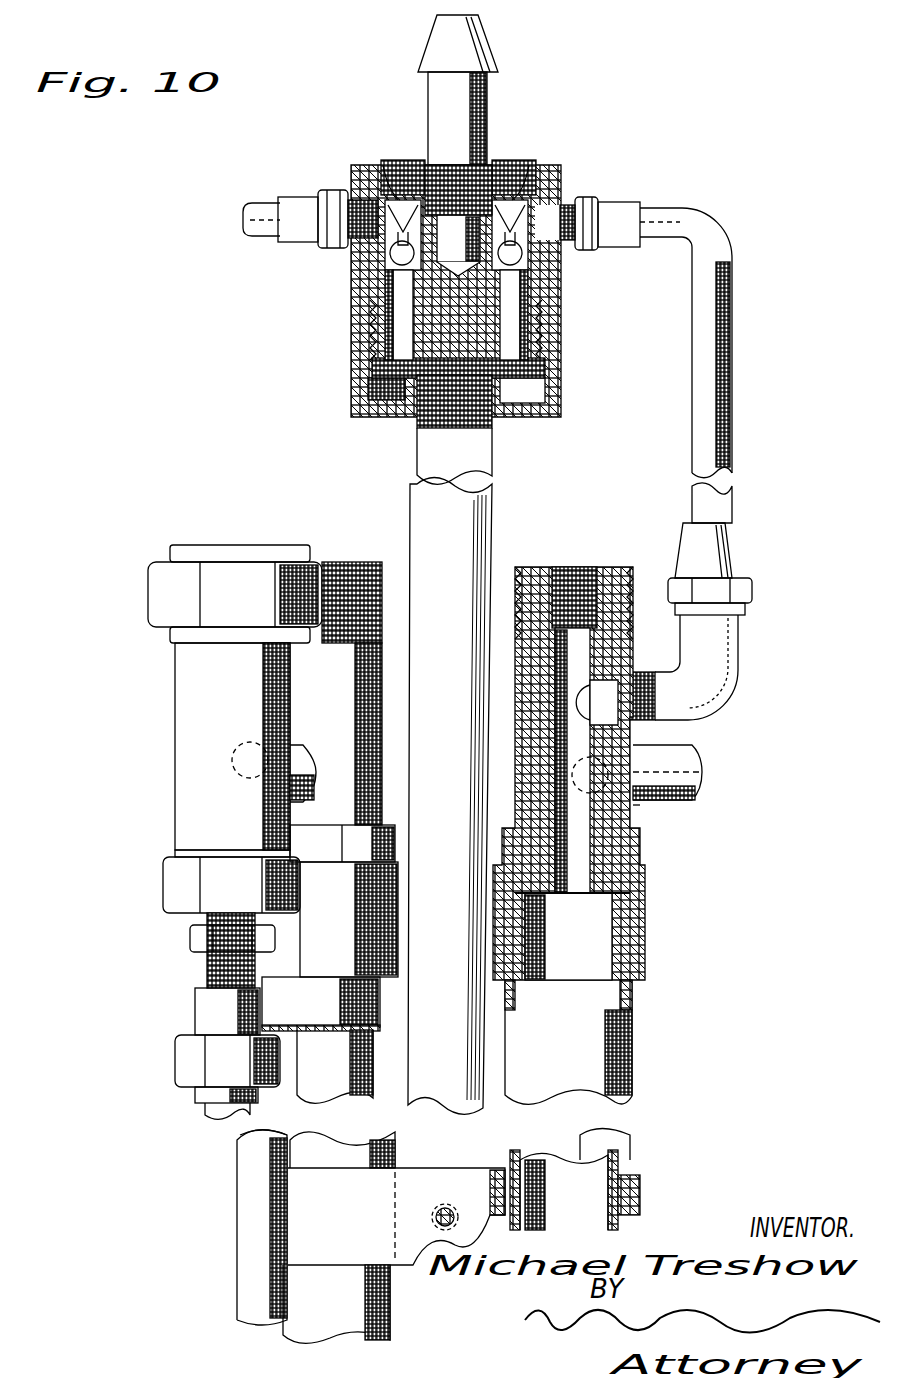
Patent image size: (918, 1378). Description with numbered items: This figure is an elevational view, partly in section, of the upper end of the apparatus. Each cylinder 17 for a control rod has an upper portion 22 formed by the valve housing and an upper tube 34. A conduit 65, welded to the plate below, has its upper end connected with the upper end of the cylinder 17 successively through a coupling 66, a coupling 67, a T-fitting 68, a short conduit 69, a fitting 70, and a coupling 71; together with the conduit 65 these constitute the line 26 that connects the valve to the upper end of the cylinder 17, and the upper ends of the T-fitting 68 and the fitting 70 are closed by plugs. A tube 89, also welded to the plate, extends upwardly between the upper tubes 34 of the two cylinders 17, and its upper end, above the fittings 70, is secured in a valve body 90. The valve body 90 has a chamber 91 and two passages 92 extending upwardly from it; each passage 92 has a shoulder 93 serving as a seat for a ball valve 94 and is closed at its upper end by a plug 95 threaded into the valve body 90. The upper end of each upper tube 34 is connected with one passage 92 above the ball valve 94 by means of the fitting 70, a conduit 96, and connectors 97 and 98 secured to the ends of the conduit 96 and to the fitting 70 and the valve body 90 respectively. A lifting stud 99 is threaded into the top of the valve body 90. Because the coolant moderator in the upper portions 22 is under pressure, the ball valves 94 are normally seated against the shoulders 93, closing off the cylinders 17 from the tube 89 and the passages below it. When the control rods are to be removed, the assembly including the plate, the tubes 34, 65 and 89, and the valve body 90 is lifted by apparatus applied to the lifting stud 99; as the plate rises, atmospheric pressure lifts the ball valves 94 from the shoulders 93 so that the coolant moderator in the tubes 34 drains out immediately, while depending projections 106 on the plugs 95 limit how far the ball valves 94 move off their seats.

The cylinder 17 is at (340, 1075).
The upper portion of the cylinder 22 is at (422, 1297).
The line 26 is at (225, 1203).
The upper tube 34 is at (320, 1160).
The conduit 65 is at (258, 1150).
The coupling 66 is at (178, 1053).
The coupling 67 is at (190, 940).
The T-fitting 68 is at (212, 706).
The short conduit 69 is at (318, 775).
The fitting 70 is at (362, 645).
The coupling 71 is at (345, 952).
The tube 89 is at (492, 515).
The valve body 90 is at (562, 398).
The chamber 91 is at (520, 370).
The passage 92 is at (395, 290).
The shoulder 93 is at (396, 255).
The ball valve 94 is at (398, 253).
The plug 95 is at (410, 165).
The conduit 96 is at (262, 238).
The connector 97 is at (738, 692).
The connector 98 is at (300, 197).
The lifting stud 99 is at (480, 45).
The depending projection 106 is at (360, 165).